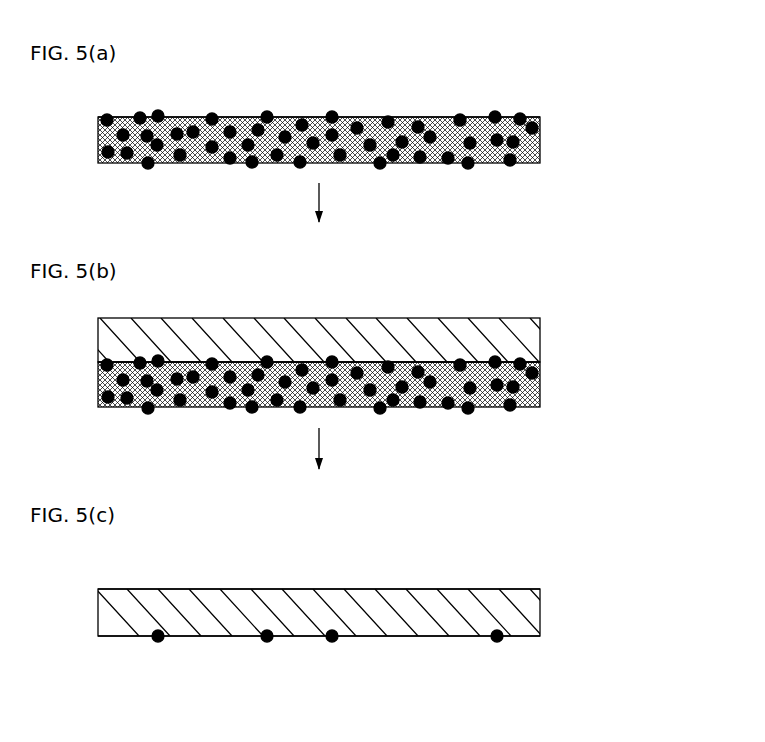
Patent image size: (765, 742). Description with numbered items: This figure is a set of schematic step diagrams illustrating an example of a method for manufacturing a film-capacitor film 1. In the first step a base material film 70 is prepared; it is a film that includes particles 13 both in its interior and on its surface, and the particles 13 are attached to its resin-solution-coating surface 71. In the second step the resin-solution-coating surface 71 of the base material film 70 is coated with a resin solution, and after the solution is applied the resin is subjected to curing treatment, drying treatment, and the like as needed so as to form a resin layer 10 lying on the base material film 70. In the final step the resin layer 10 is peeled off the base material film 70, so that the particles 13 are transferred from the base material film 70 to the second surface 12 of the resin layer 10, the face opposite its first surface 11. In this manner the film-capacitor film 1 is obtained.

In FIG. 5C, the film-capacitor film 1 is at (543, 559).
In FIG. 5B, the resin layer 10 is at (540, 341).
In FIG. 5C, the resin layer 10 is at (530, 612).
In FIG. 5C, the first surface of base layer 11 is at (437, 589).
In FIG. 5C, the second surface 12 is at (435, 636).
In FIG. 5A, the particles 13 is at (265, 116).
In FIG. 5B, the particles 13 is at (265, 358).
In FIG. 5C, the particles 13 is at (265, 641).
In FIG. 5A, the base material film 70 is at (540, 142).
In FIG. 5B, the base material film 70 is at (540, 383).
In FIG. 5A, the resin-solution-coating surface 71 is at (428, 117).
In FIG. 5B, the resin-solution-coating surface 71 is at (428, 360).